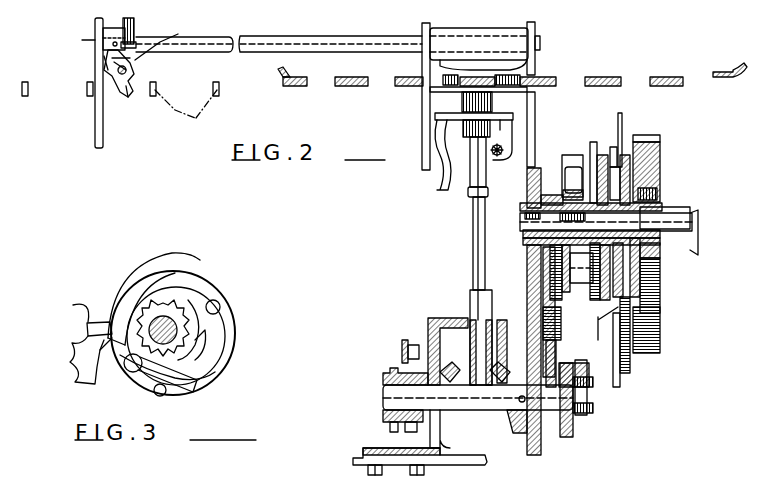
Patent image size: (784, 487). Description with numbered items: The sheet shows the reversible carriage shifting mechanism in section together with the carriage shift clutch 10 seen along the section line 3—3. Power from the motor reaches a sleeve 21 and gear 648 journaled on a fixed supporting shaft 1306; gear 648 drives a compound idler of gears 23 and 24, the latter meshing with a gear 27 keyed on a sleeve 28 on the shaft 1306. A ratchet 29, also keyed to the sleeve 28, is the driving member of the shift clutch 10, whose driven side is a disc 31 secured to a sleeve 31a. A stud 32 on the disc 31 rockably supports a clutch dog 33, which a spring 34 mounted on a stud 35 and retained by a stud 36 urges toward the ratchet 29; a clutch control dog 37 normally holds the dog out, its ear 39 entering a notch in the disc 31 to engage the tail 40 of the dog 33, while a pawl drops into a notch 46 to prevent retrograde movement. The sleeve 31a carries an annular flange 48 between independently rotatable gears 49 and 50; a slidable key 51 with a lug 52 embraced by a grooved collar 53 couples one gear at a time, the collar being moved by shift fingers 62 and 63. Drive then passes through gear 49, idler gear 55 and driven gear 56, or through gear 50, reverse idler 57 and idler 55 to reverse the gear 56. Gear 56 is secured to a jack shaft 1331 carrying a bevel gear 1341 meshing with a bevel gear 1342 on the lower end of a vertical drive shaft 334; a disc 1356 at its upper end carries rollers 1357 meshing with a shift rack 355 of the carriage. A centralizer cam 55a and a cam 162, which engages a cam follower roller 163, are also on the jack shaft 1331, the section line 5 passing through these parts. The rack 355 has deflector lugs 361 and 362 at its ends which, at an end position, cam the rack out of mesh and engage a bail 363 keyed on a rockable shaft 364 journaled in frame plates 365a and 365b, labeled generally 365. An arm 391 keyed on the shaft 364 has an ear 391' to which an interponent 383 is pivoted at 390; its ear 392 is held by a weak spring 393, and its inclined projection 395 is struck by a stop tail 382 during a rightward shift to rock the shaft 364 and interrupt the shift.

In FIG. 2, the interponent 383 is at (98, 76).
In FIG. 2, the arm 391 is at (83, 45).
In FIG. 2, the ear 391' is at (74, 67).
In FIG. 2, the frame plate 365a is at (92, 33).
In FIG. 2, the spring 393 is at (136, 26).
In FIG. 2, the rockable shaft 364 is at (340, 36).
In FIG. 2, the ear 392 is at (178, 34).
In FIG. 2, the pivot 390 is at (127, 70).
In FIG. 2, the inclined projection 395 is at (127, 92).
In FIG. 2, the tail 382 is at (352, 106).
In FIG. 2, the deflector lug 361 is at (280, 80).
In FIG. 2, the shift rack 355 is at (650, 76).
In FIG. 2, the deflector lug 362 is at (744, 63).
In FIG. 2, the bracket 365 is at (422, 120).
In FIG. 2, the bail 363 is at (538, 58).
In FIG. 2, the frame plate 365b is at (538, 64).
In FIG. 2, the rollers 1357 is at (443, 79).
In FIG. 2, the disc 1356 is at (430, 90).
In FIG. 2, the vertical drive shaft 334 is at (473, 236).
In FIG. 2, the lug 52 is at (552, 200).
In FIG. 2, the sleeve 31a is at (525, 217).
In FIG. 2, the fixed supporting shaft 1306 is at (672, 222).
In FIG. 3, the fixed supporting shaft 1306 is at (155, 322).
In FIG. 2, the sleeve 28 is at (665, 218).
In FIG. 3, the sleeve 28 is at (190, 330).
In FIG. 2, the slidable key 51 is at (569, 221).
In FIG. 2, the sleeve 21 is at (660, 205).
In FIG. 2, the gear 49 is at (555, 240).
In FIG. 2, the annular flange 48 is at (548, 255).
In FIG. 2, the annular collar 53 is at (555, 270).
In FIG. 2, the gear 50 is at (540, 295).
In FIG. 2, the reverse idler 57 is at (566, 295).
In FIG. 2, the idler gear 55 is at (477, 347).
In FIG. 2, the driven gear 56 is at (566, 347).
In FIG. 2, the section line 3 is at (628, 127).
In FIG. 2, the ear 39 is at (614, 145).
In FIG. 3, the ear 39 is at (88, 320).
In FIG. 2, the disc 31 is at (603, 155).
In FIG. 3, the disc 31 is at (215, 372).
In FIG. 2, the shift finger 62 is at (563, 175).
In FIG. 2, the shift finger 63 is at (592, 165).
In FIG. 2, the gear 648 is at (660, 140).
In FIG. 2, the ratchet 29 is at (660, 260).
In FIG. 3, the ratchet 29 is at (185, 325).
In FIG. 2, the gear 27 is at (663, 276).
In FIG. 2, the gear 23 is at (662, 328).
In FIG. 2, the gear 24 is at (630, 365).
In FIG. 2, the bevel gear 1342 is at (490, 388).
In FIG. 2, the centralizer cam 55a is at (392, 372).
In FIG. 2, the cam follower roller 163 is at (402, 345).
In FIG. 2, the section line 5 is at (404, 328).
In FIG. 2, the jack shaft 1331 is at (495, 405).
In FIG. 2, the bevel gear 1341 is at (515, 415).
In FIG. 2, the cam 162 is at (433, 462).
In FIG. 3, the clutch dog 33 is at (210, 284).
In FIG. 3, the notch 46 is at (173, 252).
In FIG. 3, the stud 32 is at (221, 304).
In FIG. 3, the spring 34 is at (212, 375).
In FIG. 3, the stud 35 is at (128, 372).
In FIG. 3, the stud 36 is at (156, 394).
In FIG. 3, the tail 40 is at (108, 338).
In FIG. 3, the clutch control dog 37 is at (70, 342).
In FIG. 3, the shift clutch 10 is at (272, 373).